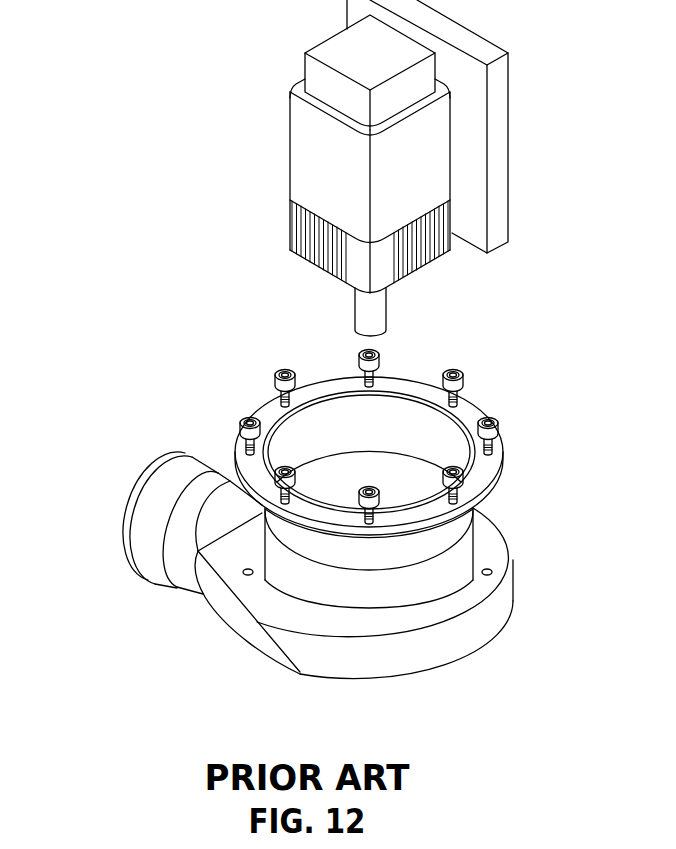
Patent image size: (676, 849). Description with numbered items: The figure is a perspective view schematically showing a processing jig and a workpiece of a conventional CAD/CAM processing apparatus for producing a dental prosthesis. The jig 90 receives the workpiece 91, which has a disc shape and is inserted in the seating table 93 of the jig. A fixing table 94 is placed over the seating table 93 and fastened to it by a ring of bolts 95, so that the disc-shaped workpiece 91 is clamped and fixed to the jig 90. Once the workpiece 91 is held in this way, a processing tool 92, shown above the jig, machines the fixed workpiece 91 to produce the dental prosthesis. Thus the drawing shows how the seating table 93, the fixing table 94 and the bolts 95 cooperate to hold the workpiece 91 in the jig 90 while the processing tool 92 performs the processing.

The jig 90 is at (122, 540).
The workpiece 91 is at (467, 542).
The processing tool 92 is at (445, 222).
The seating table 93 is at (493, 588).
The fixing table 94 is at (243, 450).
The bolts 95 is at (466, 396).